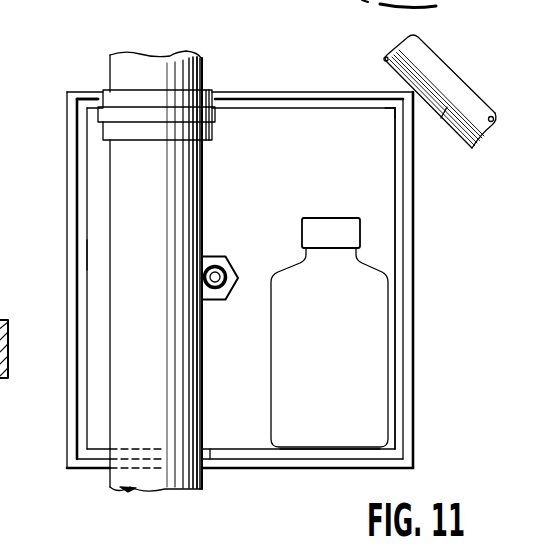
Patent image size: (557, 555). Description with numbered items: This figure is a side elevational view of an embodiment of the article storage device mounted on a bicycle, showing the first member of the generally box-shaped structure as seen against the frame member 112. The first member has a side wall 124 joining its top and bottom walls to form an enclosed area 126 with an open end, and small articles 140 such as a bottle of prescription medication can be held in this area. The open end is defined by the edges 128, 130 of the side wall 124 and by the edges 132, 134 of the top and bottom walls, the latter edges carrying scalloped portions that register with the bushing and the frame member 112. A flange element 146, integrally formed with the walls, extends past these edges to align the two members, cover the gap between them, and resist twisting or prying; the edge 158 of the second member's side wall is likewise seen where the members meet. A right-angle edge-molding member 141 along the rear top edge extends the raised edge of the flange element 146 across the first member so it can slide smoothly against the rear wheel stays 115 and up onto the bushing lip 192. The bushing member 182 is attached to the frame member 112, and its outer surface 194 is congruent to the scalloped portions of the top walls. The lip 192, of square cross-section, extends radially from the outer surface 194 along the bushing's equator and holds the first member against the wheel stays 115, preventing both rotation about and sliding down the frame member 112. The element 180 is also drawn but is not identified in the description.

The frame member 112 is at (123, 60).
The rear wheel stays 115 is at (438, 118).
The side wall 124 is at (0, 204).
The enclosed area 126 is at (315, 133).
The edge of side wall 128 is at (80, 399).
The edge of side wall 130 is at (398, 308).
The edge of top wall 132 is at (291, 106).
The edge of bottom wall 134 is at (328, 455).
The small articles 140 is at (287, 357).
The right-angle edge-molding member 141 is at (398, 93).
The flange element 146 is at (271, 91).
The edge of side wall 158 is at (0, 491).
The nut 180 is at (217, 277).
The bushing member 182 is at (122, 87).
The lip 192 is at (182, 115).
The outer surface of bushing 194 is at (212, 128).